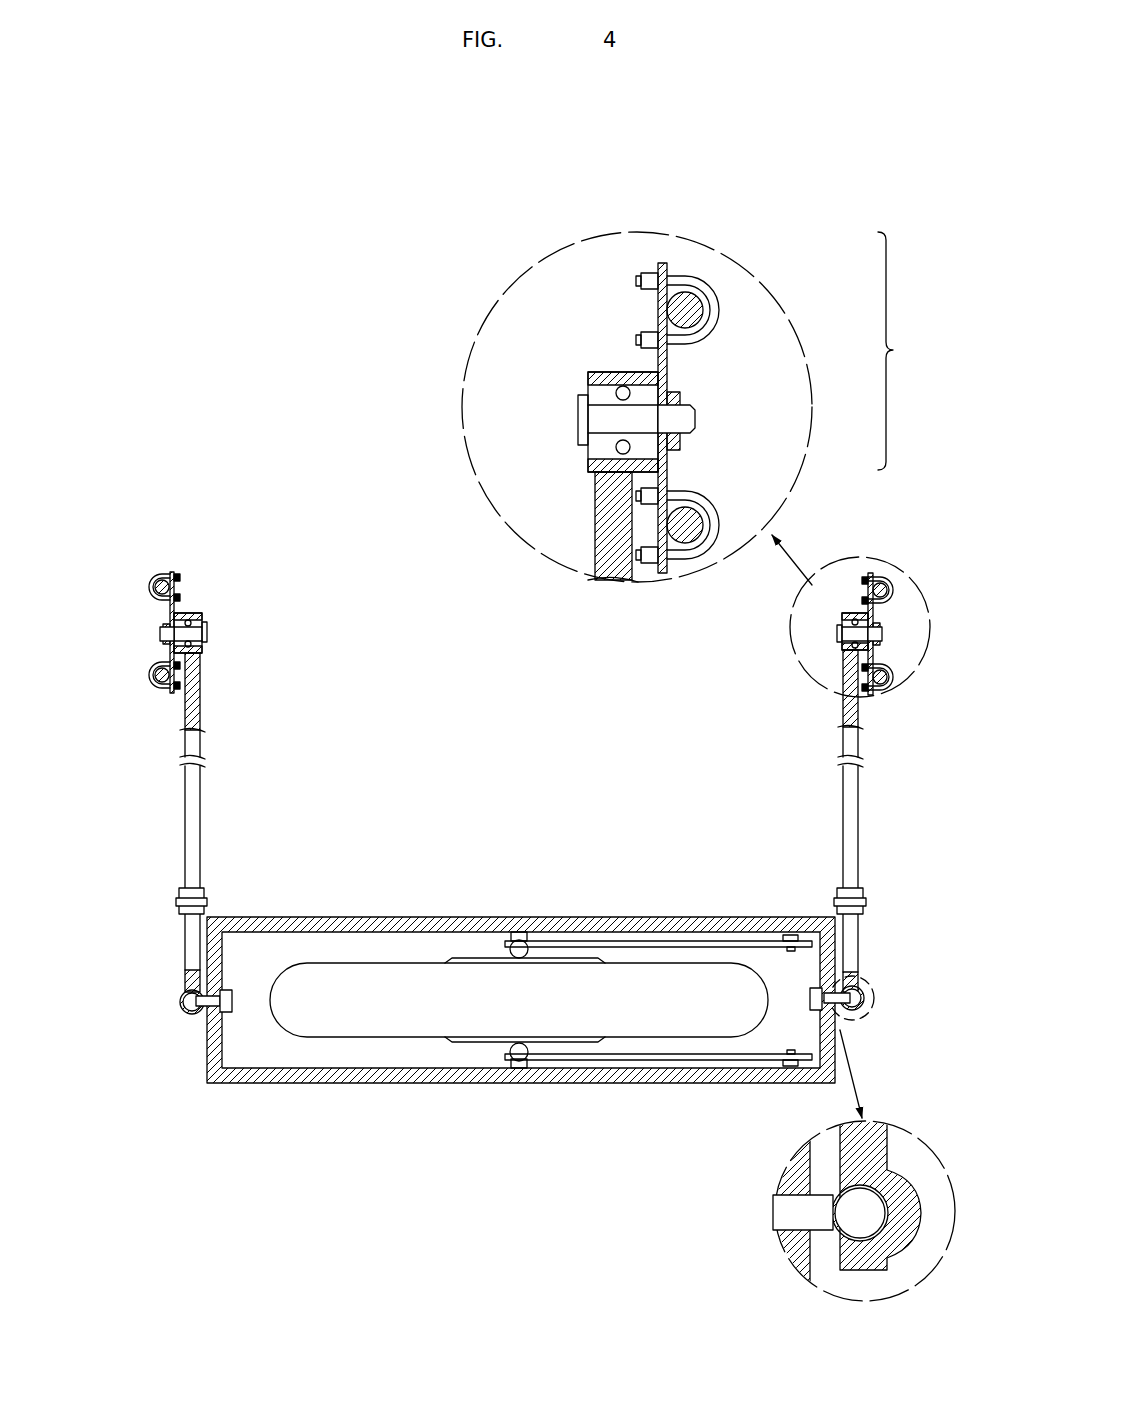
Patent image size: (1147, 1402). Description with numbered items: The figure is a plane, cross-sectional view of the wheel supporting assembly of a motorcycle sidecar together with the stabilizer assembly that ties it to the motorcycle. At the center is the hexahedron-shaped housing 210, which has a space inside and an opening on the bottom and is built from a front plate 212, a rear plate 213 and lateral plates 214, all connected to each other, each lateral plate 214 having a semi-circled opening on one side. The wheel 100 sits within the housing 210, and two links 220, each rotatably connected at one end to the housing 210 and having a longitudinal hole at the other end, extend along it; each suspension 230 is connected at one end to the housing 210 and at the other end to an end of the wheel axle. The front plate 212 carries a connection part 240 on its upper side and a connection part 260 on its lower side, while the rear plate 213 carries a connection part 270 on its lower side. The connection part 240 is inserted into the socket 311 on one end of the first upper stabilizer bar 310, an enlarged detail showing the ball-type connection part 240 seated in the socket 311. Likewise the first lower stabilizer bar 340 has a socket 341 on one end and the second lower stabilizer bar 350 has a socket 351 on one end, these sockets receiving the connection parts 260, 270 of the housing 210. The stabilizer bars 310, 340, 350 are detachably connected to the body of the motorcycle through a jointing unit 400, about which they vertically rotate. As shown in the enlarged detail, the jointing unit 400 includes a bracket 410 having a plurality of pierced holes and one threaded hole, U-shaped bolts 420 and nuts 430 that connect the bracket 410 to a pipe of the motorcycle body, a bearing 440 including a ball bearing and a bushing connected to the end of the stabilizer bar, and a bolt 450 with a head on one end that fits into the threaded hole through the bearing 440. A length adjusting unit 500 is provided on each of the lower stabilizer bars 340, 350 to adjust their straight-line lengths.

The wheel 100 is at (350, 1040).
The housing 210 is at (435, 905).
The front plate 212 is at (837, 1068).
The rear plate 213 is at (207, 1050).
The lateral plates 214 is at (683, 917).
The links 220 is at (635, 941).
The suspension 230 is at (509, 931).
The connection part 240 is at (887, 1217).
The connection part 260 is at (873, 993).
The connection part 270 is at (186, 999).
The first upper stabilizer bar 310 is at (905, 1165).
The socket 311 is at (878, 1225).
The first lower stabilizer bar 340 is at (838, 790).
The socket 341 is at (862, 1023).
The second lower stabilizer bar 350 is at (206, 788).
The socket 351 is at (200, 1013).
The jointing unit 400 is at (97, 528).
The bracket 410 is at (670, 372).
The U-shaped bolts 420 is at (710, 305).
The nuts 430 is at (664, 264).
The bearing 440 is at (650, 442).
The bolt 450 is at (683, 418).
The length adjusting unit 500 is at (210, 890).